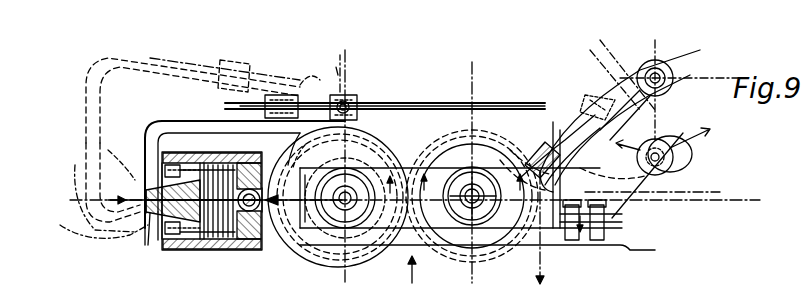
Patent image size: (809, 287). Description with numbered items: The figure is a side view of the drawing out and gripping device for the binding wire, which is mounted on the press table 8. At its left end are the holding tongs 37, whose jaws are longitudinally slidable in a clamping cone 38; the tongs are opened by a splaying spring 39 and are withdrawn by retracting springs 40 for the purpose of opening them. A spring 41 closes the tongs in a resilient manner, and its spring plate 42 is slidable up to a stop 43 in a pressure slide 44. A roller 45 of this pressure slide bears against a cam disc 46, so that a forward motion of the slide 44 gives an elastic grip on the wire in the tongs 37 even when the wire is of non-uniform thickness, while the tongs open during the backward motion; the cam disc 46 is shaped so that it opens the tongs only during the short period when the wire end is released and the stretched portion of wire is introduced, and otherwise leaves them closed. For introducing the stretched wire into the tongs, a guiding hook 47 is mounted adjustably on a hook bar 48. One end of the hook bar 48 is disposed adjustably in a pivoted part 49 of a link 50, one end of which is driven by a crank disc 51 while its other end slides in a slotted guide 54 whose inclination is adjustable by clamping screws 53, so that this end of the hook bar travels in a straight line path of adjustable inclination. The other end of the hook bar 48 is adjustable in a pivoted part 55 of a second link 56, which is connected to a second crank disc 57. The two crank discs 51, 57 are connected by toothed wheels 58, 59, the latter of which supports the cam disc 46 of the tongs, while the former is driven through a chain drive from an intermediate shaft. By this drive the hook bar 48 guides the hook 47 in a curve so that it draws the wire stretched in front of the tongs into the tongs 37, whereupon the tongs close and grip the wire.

The press table 8 is at (638, 250).
The holding tongs 37 is at (165, 215).
The clamping cone 38 is at (160, 240).
The splaying spring 39 is at (205, 250).
The retracting springs 40 is at (180, 152).
The spring 41 is at (238, 250).
The spring plate 42 is at (212, 165).
The stop 43 is at (236, 163).
The pressure slide 44 is at (290, 165).
The roller 45 is at (260, 250).
The cam disc 46 is at (302, 255).
The guiding hook 47 is at (147, 150).
The hook bar 48 is at (440, 104).
The pivoted part 49 is at (592, 100).
The link 50 is at (523, 165).
The crank disc 51 is at (508, 238).
The clamping screws 53 is at (678, 142).
The slotted guide 54 is at (578, 100).
The pivoted part 55 is at (352, 103).
The link 56 is at (360, 118).
The second crank disc 57 is at (409, 137).
The toothed wheel 58 is at (446, 252).
The toothed wheel 59 is at (352, 257).